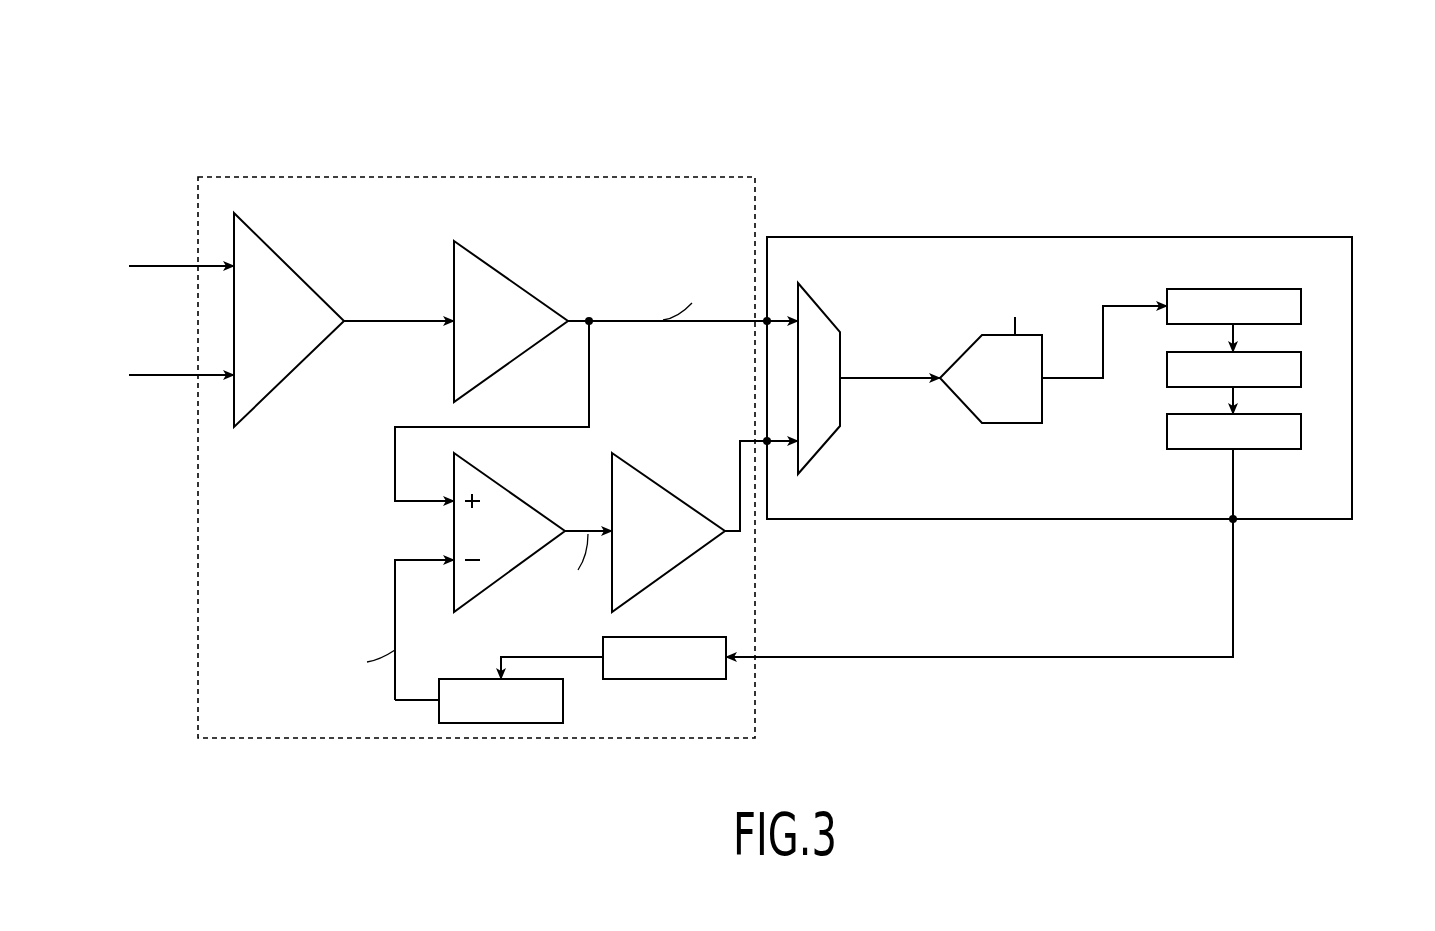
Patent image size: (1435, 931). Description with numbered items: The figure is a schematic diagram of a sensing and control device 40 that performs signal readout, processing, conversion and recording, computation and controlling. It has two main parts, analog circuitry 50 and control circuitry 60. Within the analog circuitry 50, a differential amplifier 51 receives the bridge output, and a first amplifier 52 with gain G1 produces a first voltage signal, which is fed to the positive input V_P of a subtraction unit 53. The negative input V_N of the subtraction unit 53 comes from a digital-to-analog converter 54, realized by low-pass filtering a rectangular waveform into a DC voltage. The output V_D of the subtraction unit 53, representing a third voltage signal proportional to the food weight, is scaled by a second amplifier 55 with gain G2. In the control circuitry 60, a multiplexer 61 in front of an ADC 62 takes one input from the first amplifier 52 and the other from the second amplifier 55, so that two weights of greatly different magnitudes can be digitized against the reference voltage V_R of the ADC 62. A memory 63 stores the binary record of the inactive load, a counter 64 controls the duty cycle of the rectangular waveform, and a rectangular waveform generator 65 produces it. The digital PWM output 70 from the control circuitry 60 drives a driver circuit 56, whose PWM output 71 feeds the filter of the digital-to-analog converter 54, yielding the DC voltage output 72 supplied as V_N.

The sensing and control device 40 is at (1265, 92).
The analog circuitry 50 is at (300, 738).
The differential amplifier 51 is at (290, 265).
The first amplifier 52 is at (512, 280).
The subtraction unit 53 is at (525, 497).
The digital-to-analog converter 54 is at (500, 723).
The second amplifier 55 is at (670, 490).
The driver circuit 56 is at (667, 679).
The control circuitry 60 is at (1298, 519).
The multiplexer 61 is at (820, 305).
The ADC 62 is at (1032, 335).
The memory 63 is at (1301, 306).
The counter 64 is at (1301, 368).
The rectangular waveform generator 65 is at (1301, 430).
The digital PWM output 70 is at (1072, 657).
The PWM output 71 is at (533, 656).
The DC voltage output 72 is at (395, 607).